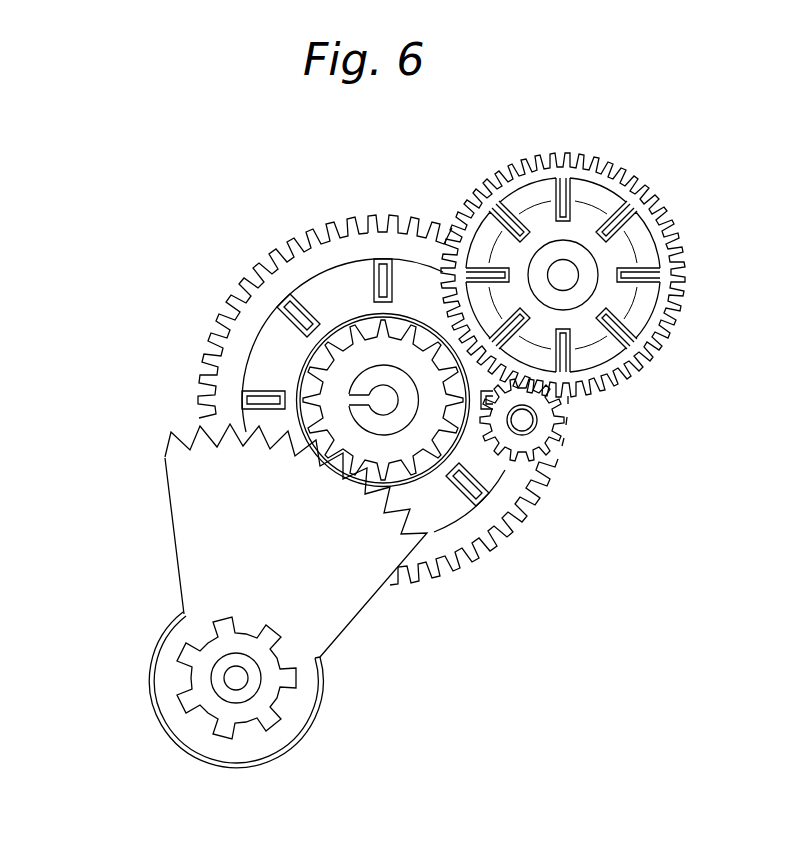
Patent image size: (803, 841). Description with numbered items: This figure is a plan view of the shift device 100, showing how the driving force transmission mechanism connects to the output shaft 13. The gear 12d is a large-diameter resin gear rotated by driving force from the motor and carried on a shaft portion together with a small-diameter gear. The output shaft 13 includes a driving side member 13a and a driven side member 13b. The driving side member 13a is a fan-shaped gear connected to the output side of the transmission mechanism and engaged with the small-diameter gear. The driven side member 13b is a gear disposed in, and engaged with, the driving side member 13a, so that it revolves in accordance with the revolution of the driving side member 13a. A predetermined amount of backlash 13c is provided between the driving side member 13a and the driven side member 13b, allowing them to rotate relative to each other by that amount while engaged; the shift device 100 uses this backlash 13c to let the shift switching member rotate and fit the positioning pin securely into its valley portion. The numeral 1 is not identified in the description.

The ratchet gear 1 is at (334, 211).
The shift device 100 is at (164, 296).
The gear 12d is at (350, 338).
The output shaft 13 is at (157, 645).
The driving side member 13a is at (164, 458).
The driven side member 13b is at (208, 638).
The backlash 13c is at (237, 619).